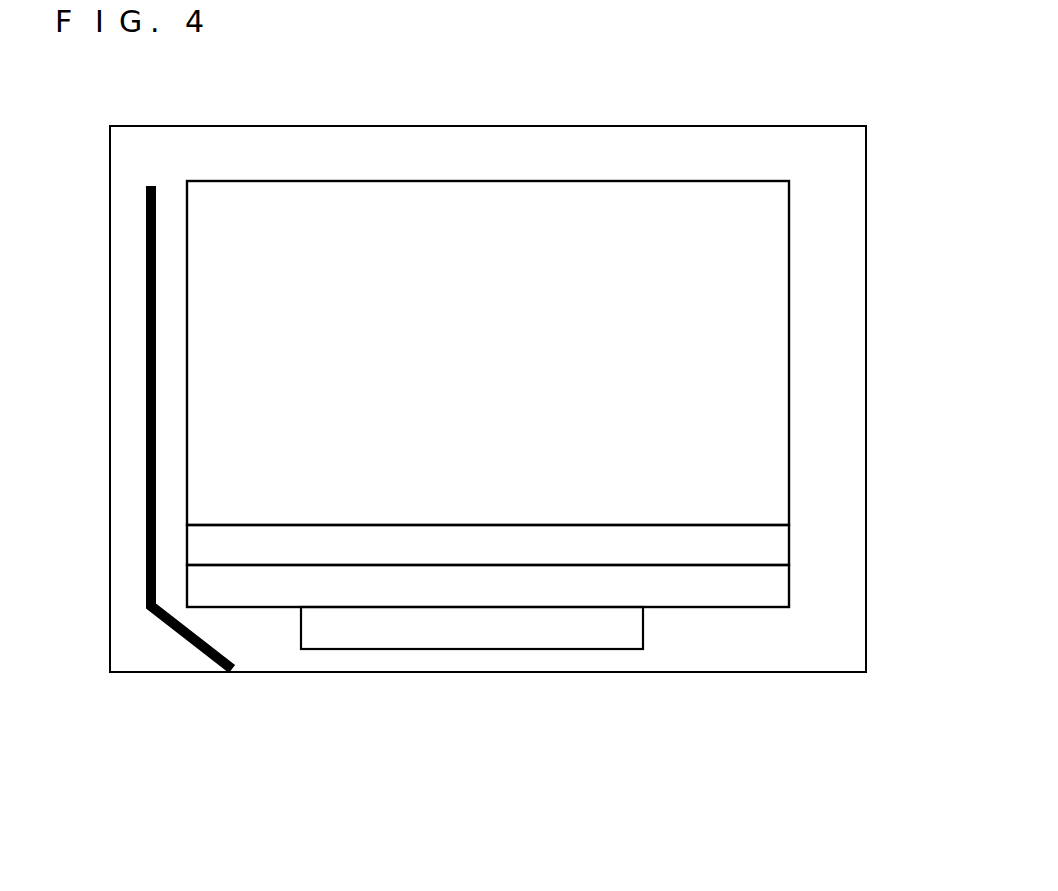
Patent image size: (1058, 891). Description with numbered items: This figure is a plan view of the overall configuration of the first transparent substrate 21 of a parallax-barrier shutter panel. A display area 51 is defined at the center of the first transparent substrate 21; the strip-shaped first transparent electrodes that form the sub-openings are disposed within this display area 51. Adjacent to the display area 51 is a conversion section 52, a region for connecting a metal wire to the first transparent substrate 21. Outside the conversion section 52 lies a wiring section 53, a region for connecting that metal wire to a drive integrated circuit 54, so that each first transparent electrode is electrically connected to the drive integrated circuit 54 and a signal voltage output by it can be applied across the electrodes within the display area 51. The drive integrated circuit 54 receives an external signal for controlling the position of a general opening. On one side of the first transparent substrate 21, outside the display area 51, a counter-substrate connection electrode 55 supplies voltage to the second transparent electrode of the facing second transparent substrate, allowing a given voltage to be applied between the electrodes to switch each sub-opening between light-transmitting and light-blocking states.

The first transparent substrate 21 is at (848, 278).
The display area 51 is at (772, 378).
The conversion section 52 is at (772, 545).
The wiring section 53 is at (772, 592).
The drive integrated circuit 54 is at (582, 637).
The counter-substrate connection electrode 55 is at (148, 402).